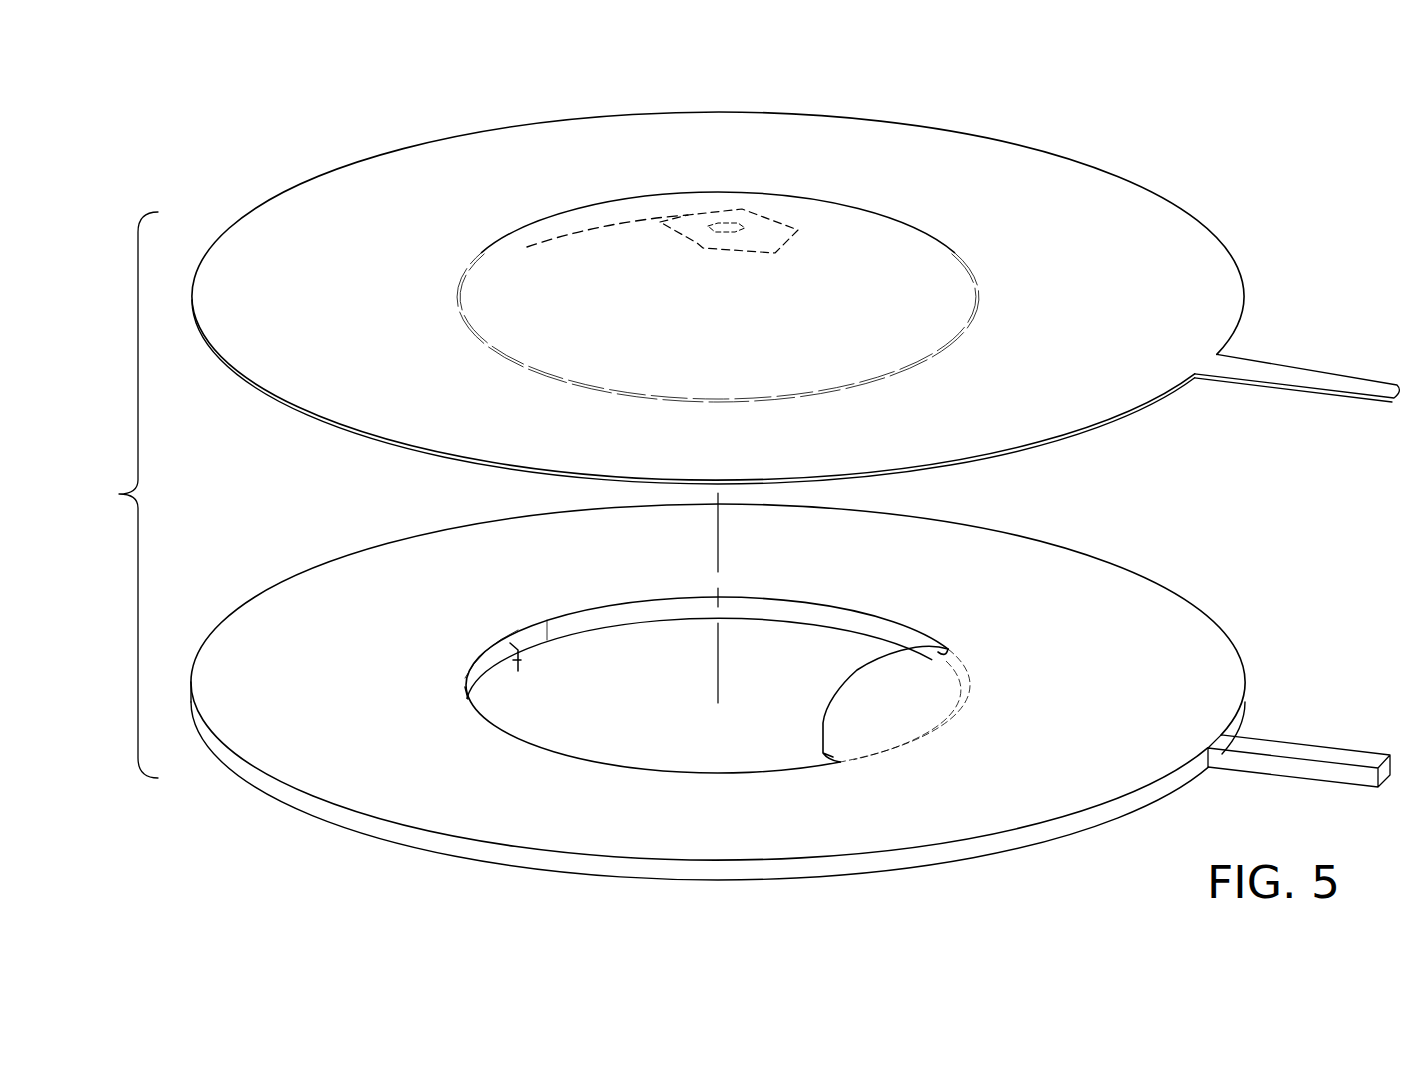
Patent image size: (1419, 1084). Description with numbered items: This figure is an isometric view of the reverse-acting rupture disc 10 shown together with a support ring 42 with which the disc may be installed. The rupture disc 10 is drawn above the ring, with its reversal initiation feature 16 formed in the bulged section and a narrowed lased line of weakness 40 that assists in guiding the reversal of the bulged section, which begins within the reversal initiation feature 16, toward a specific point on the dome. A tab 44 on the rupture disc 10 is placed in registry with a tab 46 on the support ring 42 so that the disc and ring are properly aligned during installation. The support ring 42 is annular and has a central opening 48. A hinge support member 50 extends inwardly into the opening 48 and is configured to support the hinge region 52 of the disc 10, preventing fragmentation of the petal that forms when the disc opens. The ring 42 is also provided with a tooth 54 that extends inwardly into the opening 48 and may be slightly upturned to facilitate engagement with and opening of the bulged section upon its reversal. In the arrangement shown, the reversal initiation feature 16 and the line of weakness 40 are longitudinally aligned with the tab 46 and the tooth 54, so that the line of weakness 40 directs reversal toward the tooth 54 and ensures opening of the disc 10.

The reverse-acting rupture disc 10 is at (1182, 157).
The reversal initiation feature 16 is at (773, 216).
The line of weakness 40 is at (603, 226).
The support ring 42 is at (1257, 608).
The tab 44 is at (1312, 378).
The tab 46 is at (1312, 750).
The central opening 48 is at (660, 748).
The hinge support member 50 is at (898, 668).
The hinge region 52 is at (937, 308).
The tooth 54 is at (522, 658).